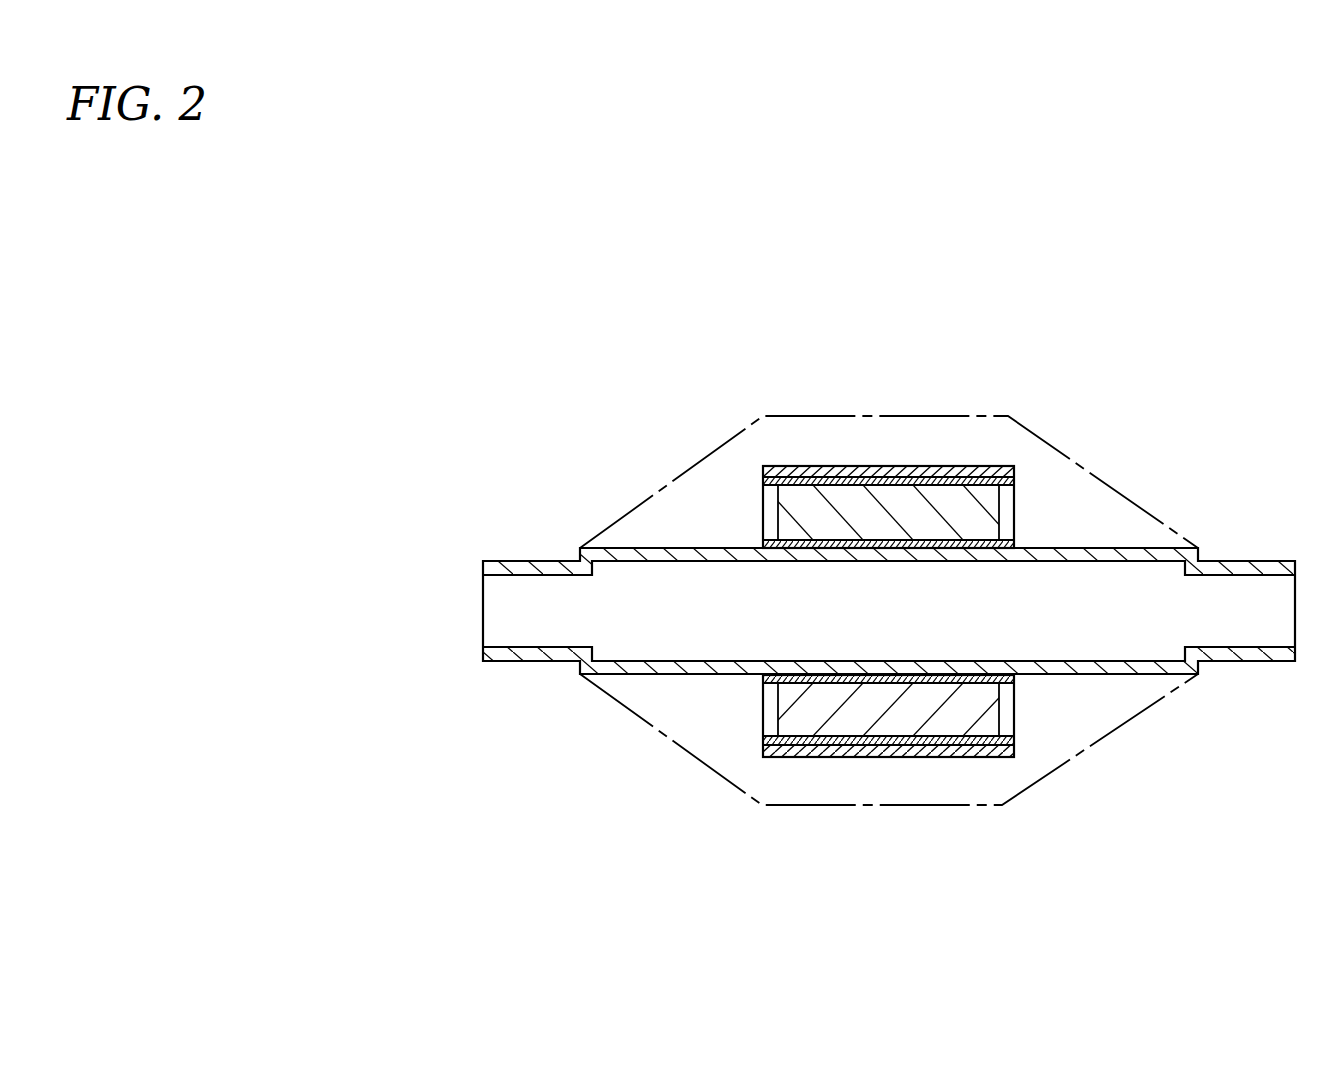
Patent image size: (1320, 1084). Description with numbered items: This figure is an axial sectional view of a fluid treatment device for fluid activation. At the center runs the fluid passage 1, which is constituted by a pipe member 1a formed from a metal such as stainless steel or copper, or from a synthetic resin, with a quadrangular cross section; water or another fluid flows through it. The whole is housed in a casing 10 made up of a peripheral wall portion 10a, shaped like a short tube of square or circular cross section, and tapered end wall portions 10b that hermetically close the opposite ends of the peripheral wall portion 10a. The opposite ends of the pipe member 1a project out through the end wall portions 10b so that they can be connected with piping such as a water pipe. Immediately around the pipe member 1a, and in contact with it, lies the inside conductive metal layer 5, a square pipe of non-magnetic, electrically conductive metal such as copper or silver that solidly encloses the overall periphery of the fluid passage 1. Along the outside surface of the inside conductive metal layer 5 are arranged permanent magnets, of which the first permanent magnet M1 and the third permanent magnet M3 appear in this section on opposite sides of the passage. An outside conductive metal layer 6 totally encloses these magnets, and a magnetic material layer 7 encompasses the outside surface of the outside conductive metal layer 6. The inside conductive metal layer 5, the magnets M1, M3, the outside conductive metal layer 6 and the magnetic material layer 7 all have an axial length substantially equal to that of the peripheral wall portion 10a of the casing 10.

The fluid passage 1 is at (640, 582).
The pipe member 1a is at (1113, 548).
The inside conductive metal layer 5 is at (977, 540).
The outside conductive metal layer 6 is at (947, 485).
The magnetic material layer 7 is at (860, 466).
The casing 10 is at (888, 545).
The peripheral wall portion 10a is at (820, 416).
The tapered end wall portions 10b is at (687, 727).
The first permanent magnet M1 is at (977, 498).
The third permanent magnet M3 is at (978, 725).